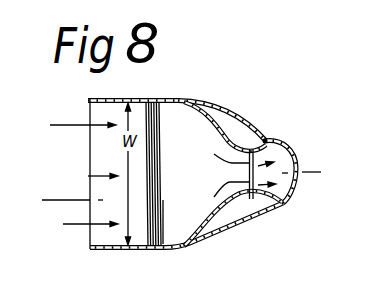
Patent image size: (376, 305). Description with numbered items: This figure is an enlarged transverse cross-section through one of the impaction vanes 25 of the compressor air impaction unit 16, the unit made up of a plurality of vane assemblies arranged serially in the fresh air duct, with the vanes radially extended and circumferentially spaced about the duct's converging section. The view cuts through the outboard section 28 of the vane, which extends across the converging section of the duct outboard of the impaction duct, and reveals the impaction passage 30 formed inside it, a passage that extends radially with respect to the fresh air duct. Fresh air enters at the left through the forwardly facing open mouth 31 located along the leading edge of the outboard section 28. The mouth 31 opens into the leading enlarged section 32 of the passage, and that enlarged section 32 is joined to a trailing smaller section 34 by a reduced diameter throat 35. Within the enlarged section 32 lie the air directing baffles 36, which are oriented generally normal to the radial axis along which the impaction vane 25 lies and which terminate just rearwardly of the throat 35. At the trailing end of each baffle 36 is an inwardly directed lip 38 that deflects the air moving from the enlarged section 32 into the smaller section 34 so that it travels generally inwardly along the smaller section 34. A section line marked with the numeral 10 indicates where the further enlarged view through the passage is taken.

The fresh air flow 10 is at (50, 189).
The compressor air impaction unit 16 is at (205, 156).
The impaction vane 25 is at (247, 107).
The outboard section 28 is at (192, 83).
The impaction passage 30 is at (195, 115).
The open mouth 31 is at (94, 233).
The leading enlarged section 32 is at (130, 236).
The trailing smaller section 34 is at (288, 203).
The reduced diameter throat 35 is at (259, 219).
The air directing baffle 36 is at (208, 165).
The inwardly directed lip 38 is at (271, 134).